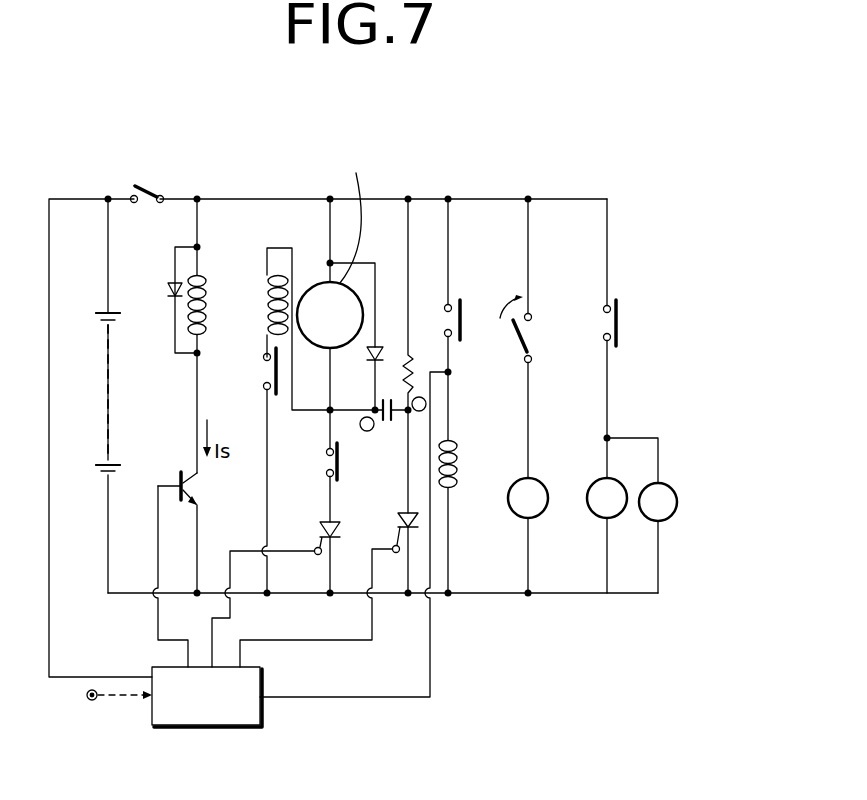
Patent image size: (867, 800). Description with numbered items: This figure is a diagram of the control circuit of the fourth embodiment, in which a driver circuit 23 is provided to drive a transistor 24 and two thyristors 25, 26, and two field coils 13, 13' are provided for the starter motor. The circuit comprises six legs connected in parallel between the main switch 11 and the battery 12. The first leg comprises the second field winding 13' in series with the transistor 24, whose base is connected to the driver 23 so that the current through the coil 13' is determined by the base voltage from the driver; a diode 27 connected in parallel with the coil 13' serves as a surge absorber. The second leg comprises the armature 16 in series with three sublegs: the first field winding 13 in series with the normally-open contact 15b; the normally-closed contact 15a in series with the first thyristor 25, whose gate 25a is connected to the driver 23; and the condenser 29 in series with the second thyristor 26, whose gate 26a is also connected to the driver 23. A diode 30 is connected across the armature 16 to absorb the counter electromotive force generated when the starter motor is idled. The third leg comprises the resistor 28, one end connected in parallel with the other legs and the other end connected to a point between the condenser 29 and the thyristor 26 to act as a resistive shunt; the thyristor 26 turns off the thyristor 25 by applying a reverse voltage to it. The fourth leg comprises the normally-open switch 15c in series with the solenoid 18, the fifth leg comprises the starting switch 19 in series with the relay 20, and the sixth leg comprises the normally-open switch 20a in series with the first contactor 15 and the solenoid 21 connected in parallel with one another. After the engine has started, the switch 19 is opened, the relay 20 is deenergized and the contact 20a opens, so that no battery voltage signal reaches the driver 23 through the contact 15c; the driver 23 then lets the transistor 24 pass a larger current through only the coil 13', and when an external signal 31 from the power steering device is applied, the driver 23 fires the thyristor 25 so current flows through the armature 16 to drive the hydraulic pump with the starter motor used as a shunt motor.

The main switch 11 is at (153, 185).
The battery 12 is at (97, 315).
The first field winding 13 is at (296, 329).
The second field winding 13' is at (217, 336).
The first contactor 15 is at (612, 516).
The normally-closed contact 15a is at (326, 455).
The normally-open contact 15b is at (263, 386).
The normally-open switch 15c is at (444, 308).
The armature 16 is at (315, 288).
The solenoid 18 is at (458, 460).
The starting switch 19 is at (523, 337).
The relay 20 is at (538, 516).
The normally-open switch 20a is at (617, 332).
The solenoid 21 is at (672, 517).
The driver circuit 23 is at (207, 727).
The transistor 24 is at (178, 478).
The first thyristor 25 is at (326, 530).
The gate 25a is at (316, 554).
The second thyristor 26 is at (404, 525).
The gate 26a is at (395, 553).
The diode 27 is at (170, 290).
The resistor 28 is at (406, 356).
The condenser 29 is at (386, 428).
The diode 30 is at (372, 362).
The external signal 31 is at (126, 698).